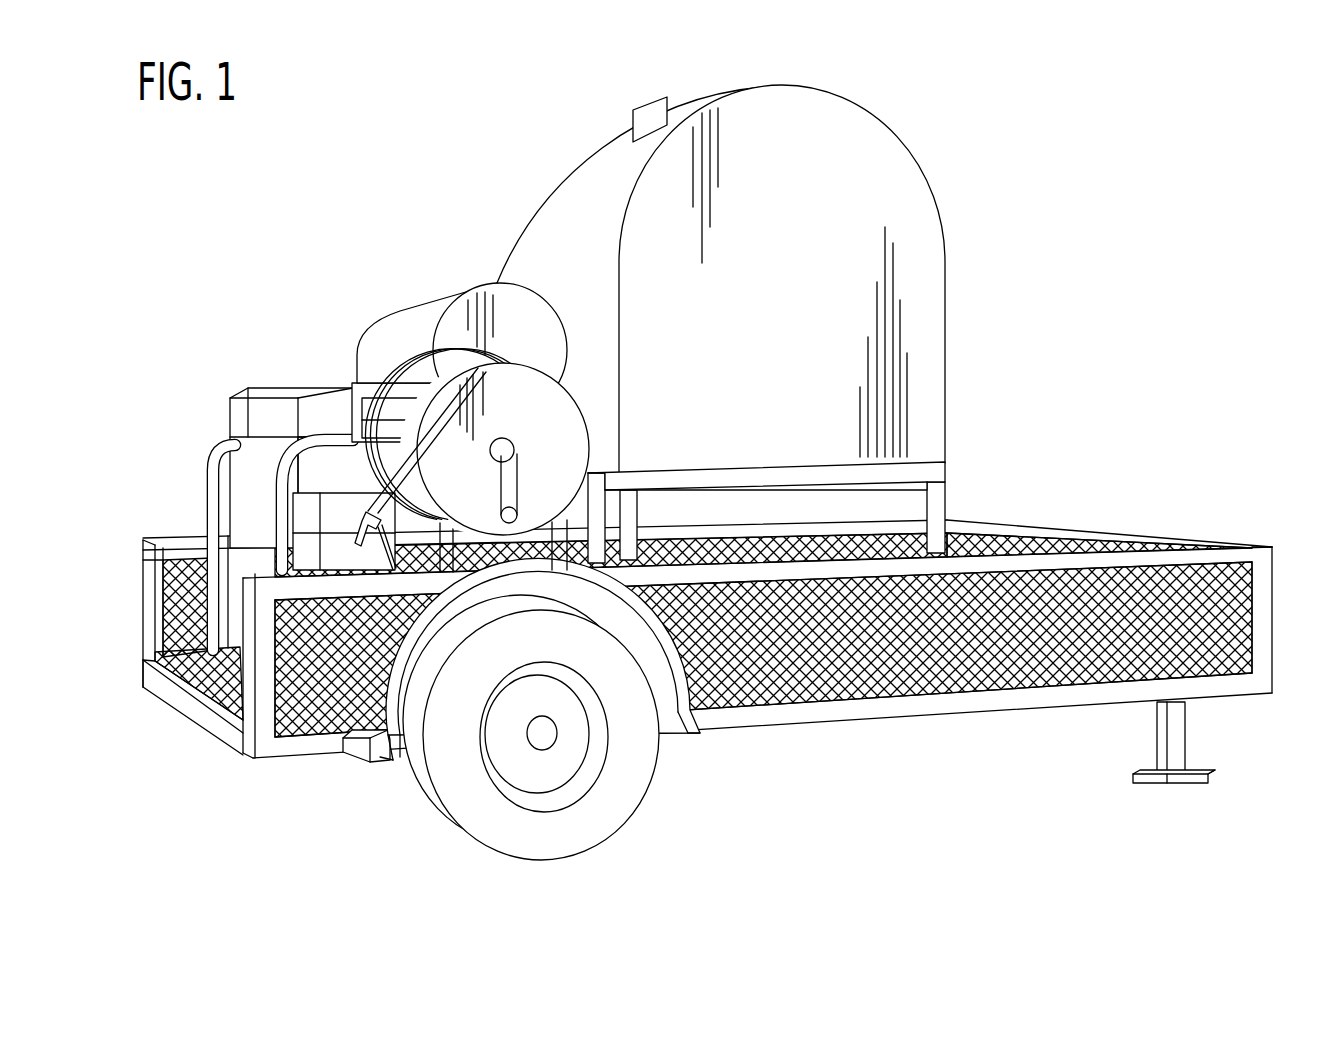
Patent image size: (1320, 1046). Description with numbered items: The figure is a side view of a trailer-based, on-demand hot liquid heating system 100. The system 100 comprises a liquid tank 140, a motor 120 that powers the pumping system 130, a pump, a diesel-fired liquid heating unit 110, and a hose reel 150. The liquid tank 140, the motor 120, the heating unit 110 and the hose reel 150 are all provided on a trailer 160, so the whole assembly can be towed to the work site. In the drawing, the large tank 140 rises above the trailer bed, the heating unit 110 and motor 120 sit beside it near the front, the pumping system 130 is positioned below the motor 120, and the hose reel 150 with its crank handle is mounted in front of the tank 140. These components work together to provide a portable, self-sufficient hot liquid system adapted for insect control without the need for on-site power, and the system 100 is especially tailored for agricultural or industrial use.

The system 100 is at (1040, 128).
The diesel-fired liquid heating unit 110 is at (402, 333).
The motor 120 is at (268, 406).
The pumping system 130 is at (307, 518).
The liquid tank 140 is at (863, 142).
The hose reel 150 is at (552, 428).
The trailer 160 is at (889, 668).